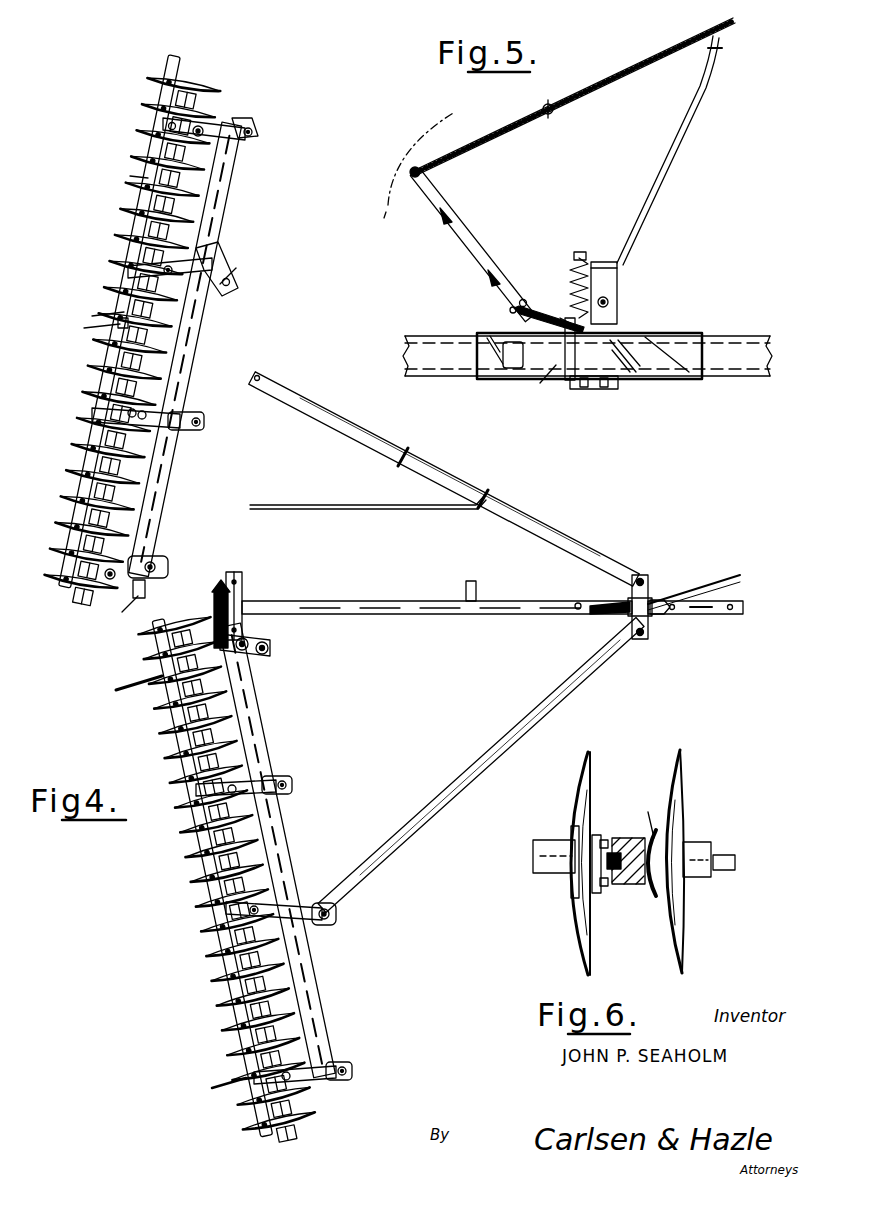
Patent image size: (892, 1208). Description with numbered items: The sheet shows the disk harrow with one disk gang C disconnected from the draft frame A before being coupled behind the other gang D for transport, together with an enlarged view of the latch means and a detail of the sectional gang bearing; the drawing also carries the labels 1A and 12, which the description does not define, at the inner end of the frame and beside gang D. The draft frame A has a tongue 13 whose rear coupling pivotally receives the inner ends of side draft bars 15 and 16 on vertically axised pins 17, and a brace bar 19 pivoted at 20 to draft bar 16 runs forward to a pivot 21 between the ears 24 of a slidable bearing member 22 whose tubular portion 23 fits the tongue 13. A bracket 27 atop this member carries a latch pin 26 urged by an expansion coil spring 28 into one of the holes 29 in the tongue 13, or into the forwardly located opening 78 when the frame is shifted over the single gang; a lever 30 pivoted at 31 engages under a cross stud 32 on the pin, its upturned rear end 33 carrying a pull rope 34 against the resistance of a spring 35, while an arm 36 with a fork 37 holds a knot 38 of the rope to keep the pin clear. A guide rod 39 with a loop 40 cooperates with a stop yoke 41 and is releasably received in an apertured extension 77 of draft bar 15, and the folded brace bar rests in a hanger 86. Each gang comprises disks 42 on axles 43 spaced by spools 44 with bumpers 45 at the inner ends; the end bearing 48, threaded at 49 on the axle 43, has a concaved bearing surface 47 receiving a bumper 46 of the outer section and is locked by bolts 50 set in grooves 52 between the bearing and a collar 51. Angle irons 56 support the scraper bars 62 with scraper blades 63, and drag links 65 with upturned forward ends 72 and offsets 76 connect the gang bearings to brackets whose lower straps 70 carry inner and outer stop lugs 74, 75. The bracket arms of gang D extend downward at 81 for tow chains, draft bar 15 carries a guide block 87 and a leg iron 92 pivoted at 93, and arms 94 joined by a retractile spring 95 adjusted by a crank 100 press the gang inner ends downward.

In FIG. 4, the end bracket 1A is at (244, 594).
In FIG. 4, the rear disk gang 12 is at (290, 892).
In FIG. 4, the tongue 13 is at (488, 614).
In FIG. 5, the tongue 13 is at (408, 358).
In FIG. 4, the side draft bar 15 is at (166, 482).
In FIG. 4, the side draft bar 16 is at (282, 822).
In FIG. 4, the pin or bolt 17 is at (234, 572).
In FIG. 4, the brace bar 19 is at (450, 794).
In FIG. 5, the brace bar 19 is at (532, 380).
In FIG. 4, the pivotal connection 20 is at (334, 918).
In FIG. 4, the point of pivotal connection 21 is at (640, 574).
In FIG. 5, the point of pivotal connection 21 is at (590, 390).
In FIG. 4, the slidable bearing member 22 is at (648, 582).
In FIG. 5, the slidable bearing member 22 is at (648, 330).
In FIG. 4, the tubular portion 23 is at (626, 614).
In FIG. 5, the tubular portion 23 is at (688, 376).
In FIG. 5, the ear 24 is at (614, 318).
In FIG. 5, the latch pin 26 is at (580, 252).
In FIG. 4, the bracket 27 is at (652, 616).
In FIG. 5, the bracket 27 is at (618, 278).
In FIG. 5, the expansion coil spring 28 is at (570, 270).
In FIG. 4, the hole 29 is at (576, 602).
In FIG. 5, the lever 30 is at (508, 316).
In FIG. 5, the pivot 31 is at (610, 302).
In FIG. 5, the cross stud 32 is at (562, 318).
In FIG. 4, the rear end of lever 33 is at (600, 612).
In FIG. 5, the rear end of lever 33 is at (462, 244).
In FIG. 4, the pull rope 34 is at (700, 587).
In FIG. 5, the pull rope 34 is at (600, 88).
In FIG. 5, the spring 35 is at (523, 300).
In FIG. 5, the arm 36 is at (666, 178).
In FIG. 4, the fork 37 is at (668, 616).
In FIG. 5, the fork 37 is at (727, 49).
In FIG. 5, the knot 38 is at (546, 106).
In FIG. 4, the guide or gauge rod 39 is at (400, 510).
In FIG. 4, the loop 40 is at (490, 494).
In FIG. 4, the stop yoke 41 is at (410, 454).
In FIG. 4, the disk 42 is at (232, 1132).
In FIG. 6, the disk 42 is at (580, 958).
In FIG. 4, the axle 43 is at (132, 268).
In FIG. 6, the axle 43 is at (533, 862).
In FIG. 4, the spacing spool 44 is at (200, 1048).
In FIG. 6, the spacing spool 44 is at (708, 842).
In FIG. 4, the bumper 45 is at (58, 632).
In FIG. 4, the bumper 46 is at (188, 320).
In FIG. 6, the bumper 46 is at (648, 813).
In FIG. 6, the bearing surface 47 is at (628, 894).
In FIG. 4, the end bearing 48 is at (226, 264).
In FIG. 6, the end bearing 48 is at (626, 850).
In FIG. 6, the threaded portion 49 is at (600, 892).
In FIG. 4, the bolt 50 is at (97, 326).
In FIG. 6, the bolt 50 is at (604, 836).
In FIG. 5, the collar 51 is at (556, 384).
In FIG. 6, the collar 51 is at (580, 900).
In FIG. 6, the groove 52 is at (572, 840).
In FIG. 4, the angle iron 56 is at (248, 122).
In FIG. 4, the scraper bar 62 is at (174, 56).
In FIG. 4, the scraper blade 63 is at (266, 784).
In FIG. 4, the drag link 65 is at (215, 122).
In FIG. 4, the lower strap 70 is at (274, 907).
In FIG. 4, the forward end of drag link 72 is at (236, 273).
In FIG. 4, the inner stop lug 74 is at (126, 611).
In FIG. 4, the outer stop lug 75 is at (132, 540).
In FIG. 4, the offset 76 is at (305, 1084).
In FIG. 4, the apertured extension 77 is at (205, 428).
In FIG. 4, the forwardly located opening 78 is at (744, 607).
In FIG. 4, the rearwardly and downwardly extended portion 81 is at (173, 883).
In FIG. 4, the hanger 86 is at (470, 579).
In FIG. 4, the guide member or block 87 is at (146, 586).
In FIG. 4, the leg iron 92 is at (196, 352).
In FIG. 4, the pivotal connection 93 is at (186, 356).
In FIG. 4, the arm 94 is at (112, 590).
In FIG. 4, the retractile coil spring 95 is at (160, 640).
In FIG. 4, the crank 100 is at (214, 596).
In FIG. 4, the draft frame A is at (444, 479).
In FIG. 4, the disk gang C is at (56, 421).
In FIG. 4, the disk gang D is at (204, 928).